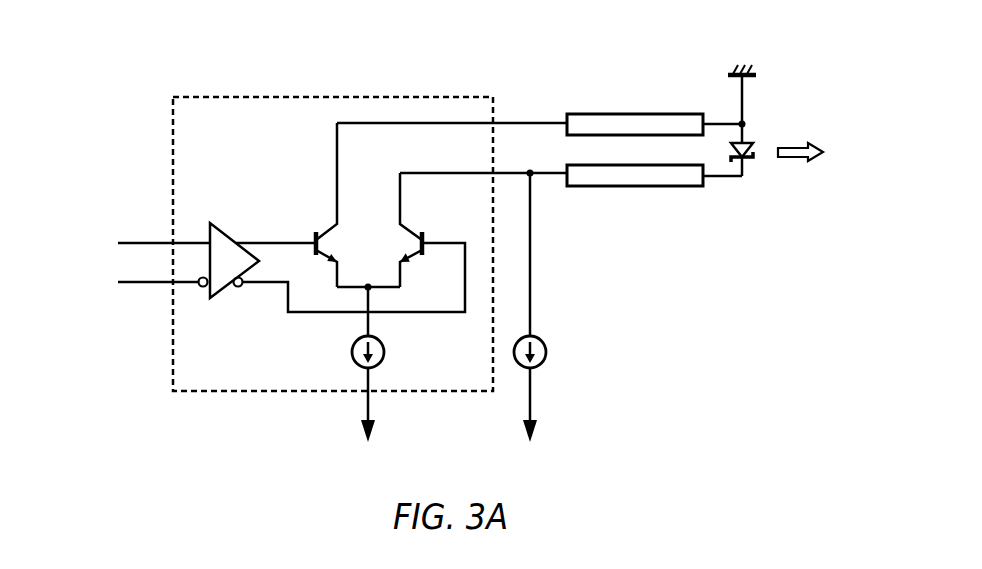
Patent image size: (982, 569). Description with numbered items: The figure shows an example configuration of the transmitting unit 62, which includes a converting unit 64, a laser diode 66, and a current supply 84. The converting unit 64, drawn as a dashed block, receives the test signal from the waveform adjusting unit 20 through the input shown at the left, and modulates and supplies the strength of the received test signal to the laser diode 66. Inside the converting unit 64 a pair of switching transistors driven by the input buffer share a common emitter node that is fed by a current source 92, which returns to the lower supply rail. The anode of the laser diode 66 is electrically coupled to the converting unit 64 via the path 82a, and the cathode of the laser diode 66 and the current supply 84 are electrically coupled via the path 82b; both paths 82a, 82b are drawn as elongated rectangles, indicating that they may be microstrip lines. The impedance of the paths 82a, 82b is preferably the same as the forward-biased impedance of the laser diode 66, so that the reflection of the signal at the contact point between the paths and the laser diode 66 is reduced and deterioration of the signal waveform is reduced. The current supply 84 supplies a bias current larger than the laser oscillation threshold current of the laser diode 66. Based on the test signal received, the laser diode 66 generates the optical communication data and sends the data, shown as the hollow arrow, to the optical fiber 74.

The transmitting unit 62 is at (841, 30).
The waveform adjusting unit 20 is at (100, 242).
The converting unit 64 is at (340, 97).
The current source 92 is at (384, 352).
The current supply 84 is at (546, 352).
The path 82a is at (636, 113).
The path 82b is at (636, 187).
The laser diode 66 is at (747, 140).
The optical fiber 74 is at (767, 165).